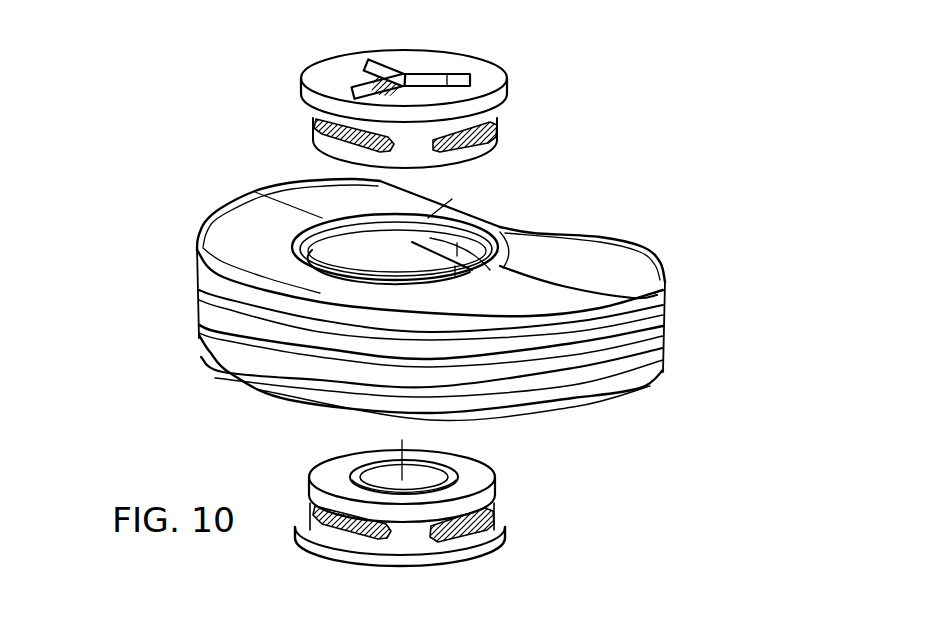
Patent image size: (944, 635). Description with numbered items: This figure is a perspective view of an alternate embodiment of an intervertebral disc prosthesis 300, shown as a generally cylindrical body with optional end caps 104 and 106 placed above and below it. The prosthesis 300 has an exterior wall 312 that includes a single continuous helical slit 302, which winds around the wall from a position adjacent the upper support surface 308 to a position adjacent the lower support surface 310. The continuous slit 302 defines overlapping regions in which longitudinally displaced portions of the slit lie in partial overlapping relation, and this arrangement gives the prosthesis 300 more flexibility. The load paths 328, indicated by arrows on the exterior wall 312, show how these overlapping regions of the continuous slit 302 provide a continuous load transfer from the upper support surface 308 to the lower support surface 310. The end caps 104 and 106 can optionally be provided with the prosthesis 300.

The prosthesis 300 is at (412, 293).
The end cap 104 is at (490, 87).
The end cap 106 is at (505, 533).
The continuous helical slit 302 is at (627, 357).
The upper support surface 308 is at (563, 265).
The lower support surface 310 is at (263, 398).
The exterior wall 312 is at (663, 320).
The load paths 328 is at (585, 339).